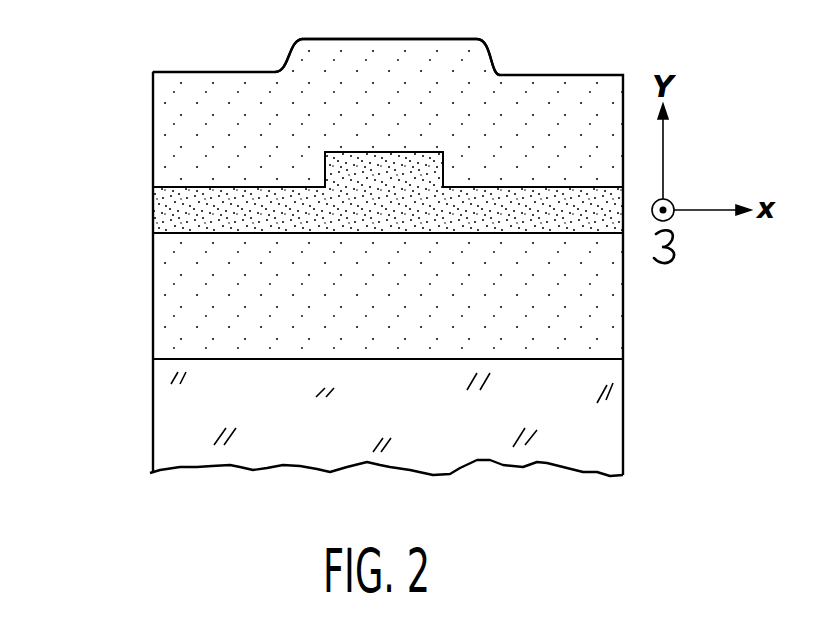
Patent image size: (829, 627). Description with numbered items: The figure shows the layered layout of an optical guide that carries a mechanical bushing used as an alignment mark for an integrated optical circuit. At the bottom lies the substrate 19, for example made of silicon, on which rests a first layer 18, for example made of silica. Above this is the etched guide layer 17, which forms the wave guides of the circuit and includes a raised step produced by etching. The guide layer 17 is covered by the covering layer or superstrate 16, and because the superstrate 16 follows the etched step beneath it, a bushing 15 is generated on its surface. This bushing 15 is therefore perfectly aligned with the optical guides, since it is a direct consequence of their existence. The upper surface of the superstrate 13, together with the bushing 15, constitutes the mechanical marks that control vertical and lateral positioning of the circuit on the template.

The upper surface of the superstrate 13 is at (540, 75).
The bushing 15 is at (360, 47).
The superstrate 16 is at (166, 115).
The etched guide layer 17 is at (173, 209).
The first layer 18 is at (178, 320).
The substrate 19 is at (171, 436).